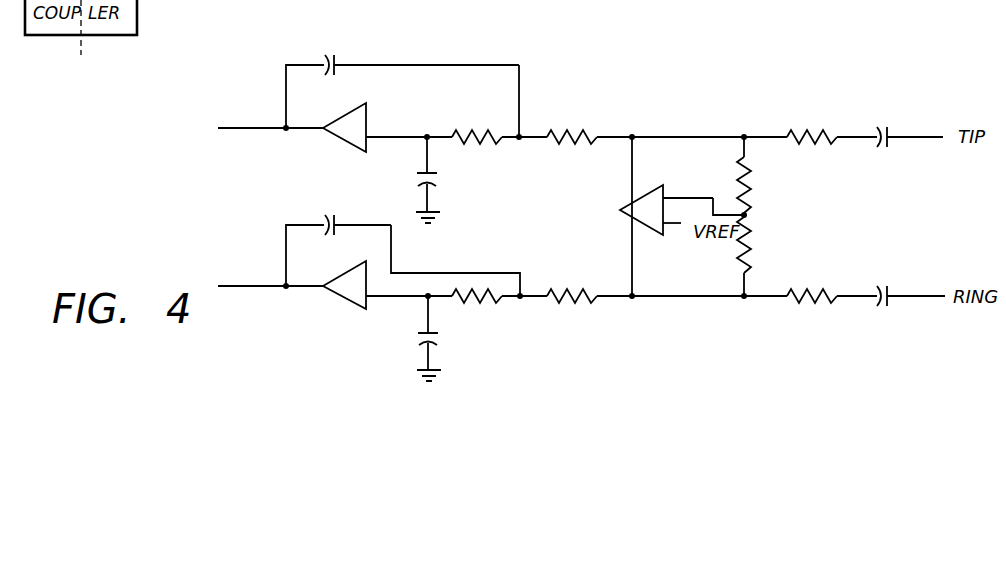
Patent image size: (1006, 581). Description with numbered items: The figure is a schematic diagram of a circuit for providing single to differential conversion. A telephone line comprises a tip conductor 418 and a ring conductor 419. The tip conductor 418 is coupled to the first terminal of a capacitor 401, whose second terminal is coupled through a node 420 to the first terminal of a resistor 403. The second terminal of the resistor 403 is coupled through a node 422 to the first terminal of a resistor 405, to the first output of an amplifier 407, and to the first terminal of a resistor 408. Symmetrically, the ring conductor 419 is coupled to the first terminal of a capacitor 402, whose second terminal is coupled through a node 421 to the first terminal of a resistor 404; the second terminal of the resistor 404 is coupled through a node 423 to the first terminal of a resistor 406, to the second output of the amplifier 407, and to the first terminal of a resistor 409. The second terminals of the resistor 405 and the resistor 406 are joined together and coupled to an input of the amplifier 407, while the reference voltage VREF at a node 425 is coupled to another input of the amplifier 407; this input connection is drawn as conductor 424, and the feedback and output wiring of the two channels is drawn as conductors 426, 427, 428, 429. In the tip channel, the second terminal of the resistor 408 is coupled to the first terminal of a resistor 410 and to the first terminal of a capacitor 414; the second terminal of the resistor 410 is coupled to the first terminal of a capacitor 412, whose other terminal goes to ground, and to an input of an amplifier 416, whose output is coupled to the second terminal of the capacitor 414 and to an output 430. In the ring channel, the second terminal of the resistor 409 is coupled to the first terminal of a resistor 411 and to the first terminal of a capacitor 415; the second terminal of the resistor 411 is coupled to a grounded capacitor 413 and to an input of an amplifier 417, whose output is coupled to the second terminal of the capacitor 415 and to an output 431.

The capacitor 401 is at (890, 140).
The capacitor 402 is at (889, 288).
The resistor 403 is at (807, 130).
The resistor 404 is at (815, 301).
The resistor 405 is at (750, 158).
The resistor 406 is at (748, 265).
The amplifier 407 is at (627, 215).
The resistor 408 is at (558, 143).
The resistor 409 is at (573, 301).
The resistor 410 is at (492, 131).
The resistor 411 is at (480, 301).
The capacitor 412 is at (437, 184).
The capacitor 413 is at (422, 343).
The capacitor 414 is at (342, 61).
The capacitor 415 is at (340, 222).
The amplifier 416 is at (339, 144).
The amplifier 417 is at (340, 300).
The tip conductor 418 is at (914, 133).
The ring conductor 419 is at (905, 299).
The node 420 is at (855, 140).
The node 421 is at (852, 290).
The node 422 is at (660, 135).
The node 423 is at (708, 298).
The comparator input conductor 424 is at (680, 197).
The node 425 is at (674, 223).
The tip feedback conductor 426 is at (522, 80).
The ring feedback conductor 427 is at (503, 272).
The tip amplifier output conductor 428 is at (397, 137).
The ring amplifier output conductor 429 is at (380, 298).
The output 430 is at (252, 127).
The output 431 is at (258, 286).